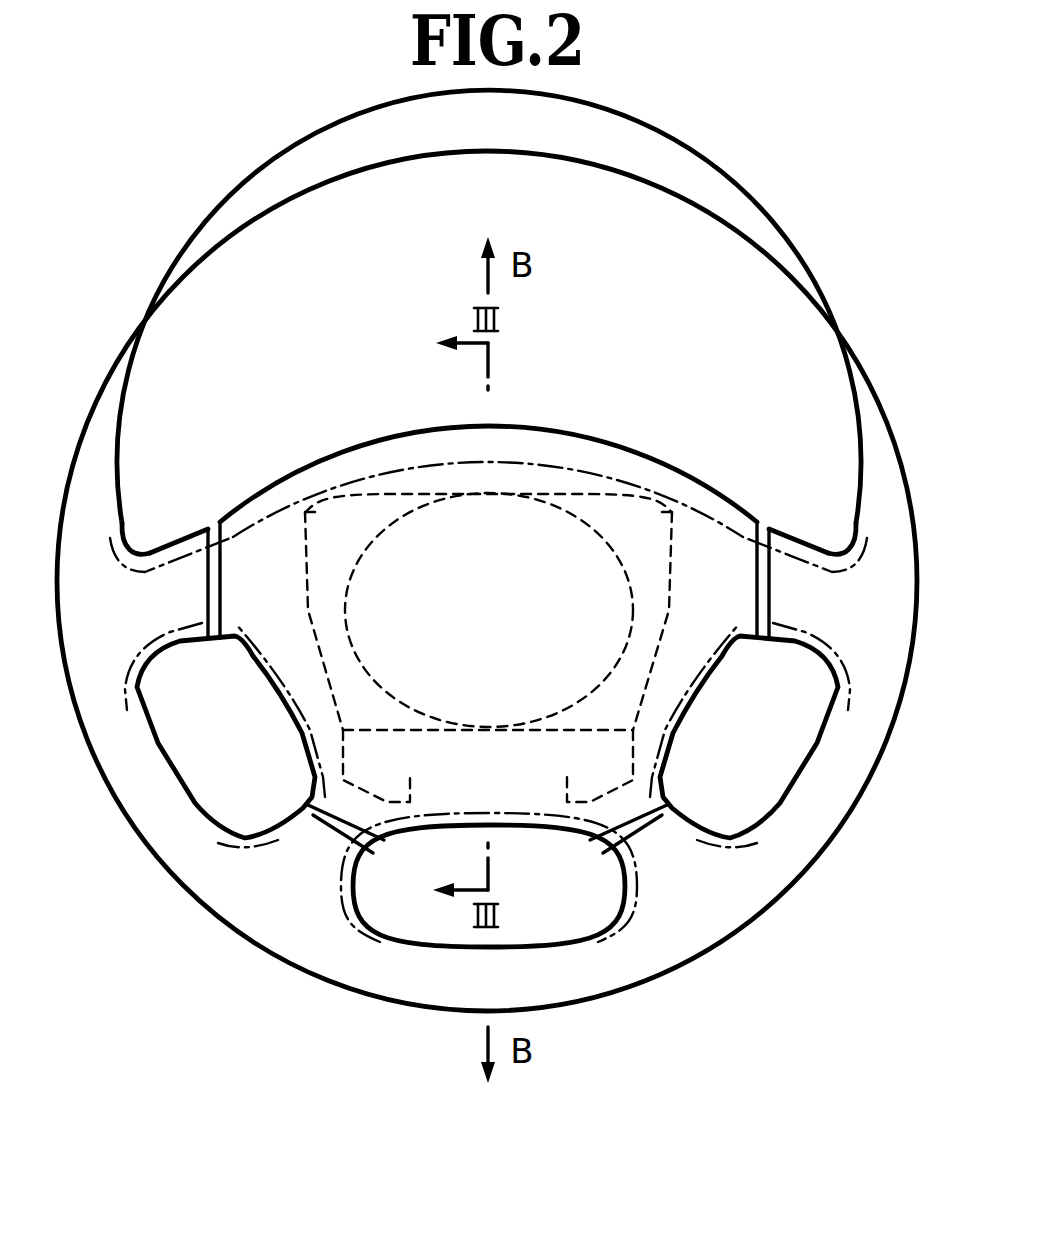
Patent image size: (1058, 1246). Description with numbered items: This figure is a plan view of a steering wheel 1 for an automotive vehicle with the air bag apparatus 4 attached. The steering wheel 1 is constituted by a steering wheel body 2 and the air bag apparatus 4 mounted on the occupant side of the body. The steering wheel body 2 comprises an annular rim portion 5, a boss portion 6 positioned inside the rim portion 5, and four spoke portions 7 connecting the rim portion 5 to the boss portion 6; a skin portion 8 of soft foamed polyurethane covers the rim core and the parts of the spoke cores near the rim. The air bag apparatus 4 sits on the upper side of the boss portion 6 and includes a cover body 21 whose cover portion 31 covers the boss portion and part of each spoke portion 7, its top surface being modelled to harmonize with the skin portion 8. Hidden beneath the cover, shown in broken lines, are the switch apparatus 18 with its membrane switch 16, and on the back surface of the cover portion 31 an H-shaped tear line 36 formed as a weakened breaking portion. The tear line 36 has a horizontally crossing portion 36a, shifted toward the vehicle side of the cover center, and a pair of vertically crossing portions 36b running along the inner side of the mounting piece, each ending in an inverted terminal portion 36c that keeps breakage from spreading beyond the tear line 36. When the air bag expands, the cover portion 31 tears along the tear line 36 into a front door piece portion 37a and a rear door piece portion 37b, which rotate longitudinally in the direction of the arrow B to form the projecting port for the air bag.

The steering wheel 1 is at (733, 178).
The steering wheel body 2 is at (781, 258).
The air bag apparatus 4 is at (645, 455).
The rim portion 5 is at (843, 331).
The boss portion 6 is at (680, 473).
The spoke portion 7 is at (807, 542).
The skin portion 8 is at (865, 417).
The membrane switch 16 is at (460, 493).
The switch apparatus 18 is at (522, 493).
The cover body 21 is at (573, 438).
The cover portion 31 is at (388, 483).
The tear line 36 is at (300, 530).
The horizontally crossing portion 36a is at (620, 743).
The vertically crossing portion 36b is at (310, 610).
The terminal portion 36c is at (338, 500).
The door piece portion 37a is at (320, 513).
The door piece portion 37b is at (347, 744).